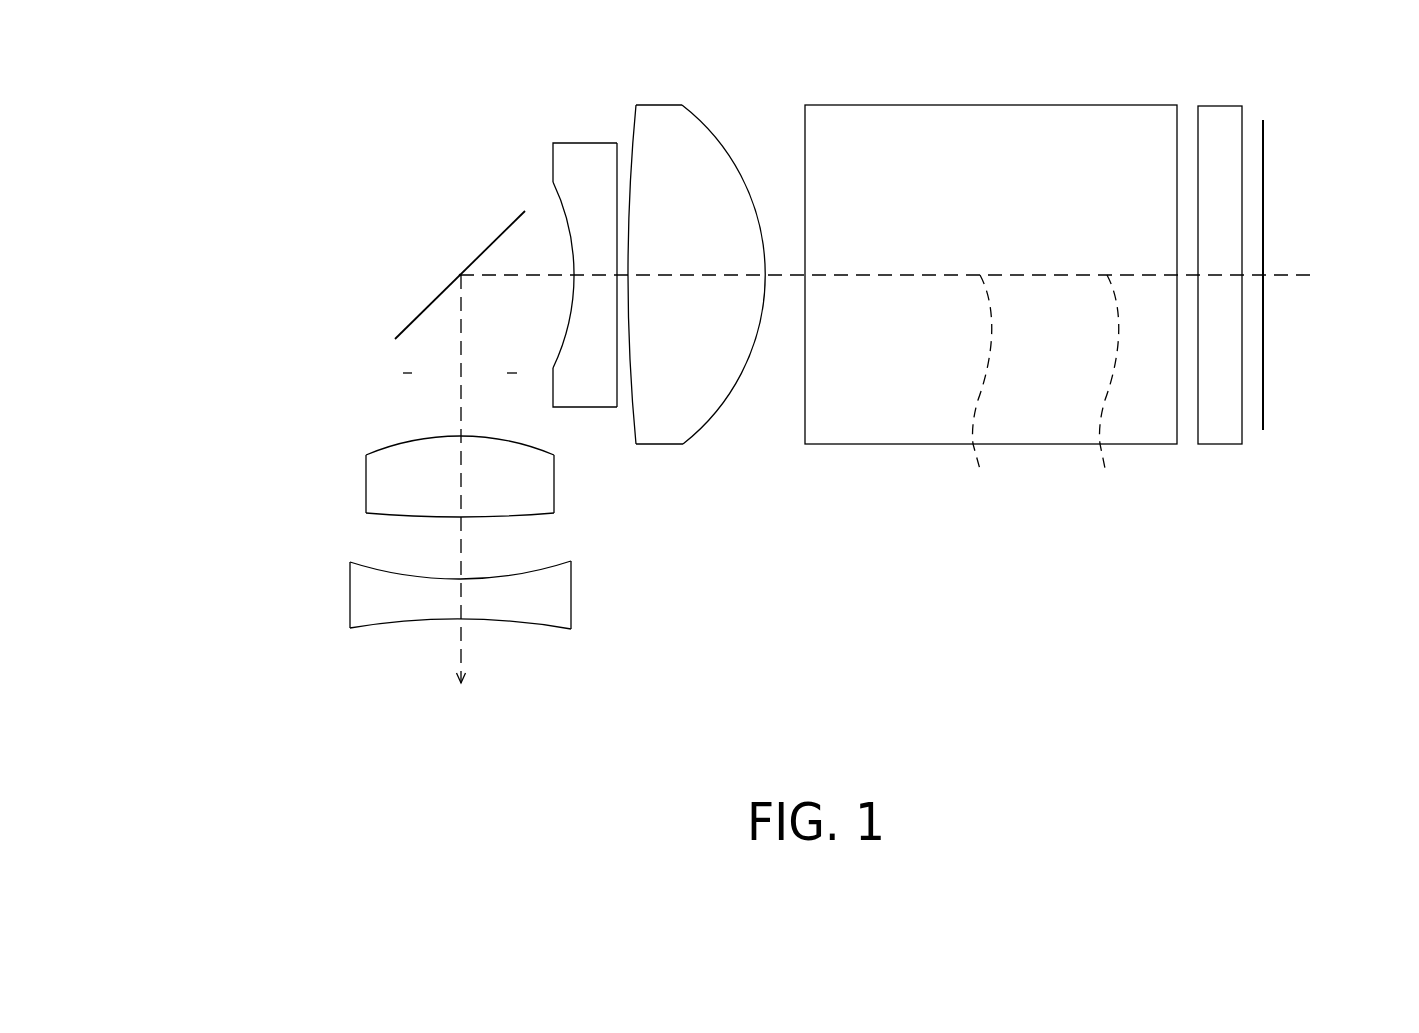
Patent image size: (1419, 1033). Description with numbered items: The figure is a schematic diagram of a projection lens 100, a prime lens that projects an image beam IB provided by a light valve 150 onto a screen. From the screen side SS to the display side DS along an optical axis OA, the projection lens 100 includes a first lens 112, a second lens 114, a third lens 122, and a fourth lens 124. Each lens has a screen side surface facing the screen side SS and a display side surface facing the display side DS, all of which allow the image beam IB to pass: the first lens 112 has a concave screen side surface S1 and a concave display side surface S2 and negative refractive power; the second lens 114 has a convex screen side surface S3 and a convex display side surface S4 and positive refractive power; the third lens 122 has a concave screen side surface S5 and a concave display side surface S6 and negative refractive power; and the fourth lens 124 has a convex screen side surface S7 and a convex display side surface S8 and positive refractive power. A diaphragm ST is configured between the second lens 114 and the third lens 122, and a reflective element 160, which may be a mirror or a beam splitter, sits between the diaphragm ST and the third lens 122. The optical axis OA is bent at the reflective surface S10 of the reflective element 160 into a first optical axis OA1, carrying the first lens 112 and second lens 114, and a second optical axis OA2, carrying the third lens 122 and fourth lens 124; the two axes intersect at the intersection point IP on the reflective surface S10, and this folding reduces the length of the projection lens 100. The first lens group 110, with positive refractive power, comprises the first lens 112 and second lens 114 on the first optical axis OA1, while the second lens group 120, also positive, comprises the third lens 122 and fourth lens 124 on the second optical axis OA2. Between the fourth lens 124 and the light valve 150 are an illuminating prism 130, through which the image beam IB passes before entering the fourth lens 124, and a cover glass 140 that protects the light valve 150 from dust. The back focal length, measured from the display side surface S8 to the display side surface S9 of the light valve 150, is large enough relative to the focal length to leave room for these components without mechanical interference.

The projection lens 100 is at (1370, 725).
The first lens group 110 is at (183, 72).
The first lens 112 is at (418, 601).
The second lens 114 is at (417, 485).
The second lens group 120 is at (183, 173).
The third lens 122 is at (561, 281).
The fourth lens 124 is at (696, 274).
The illuminating prism 130 is at (976, 105).
The cover glass 140 is at (1221, 106).
The light valve 150 is at (1258, 272).
The reflective element 160 is at (401, 297).
The screen side surface of the first lens S1 is at (386, 628).
The display side surface of the first lens S2 is at (386, 562).
The screen side surface of the second lens S3 is at (385, 516).
The display side surface of the second lens S4 is at (385, 448).
The screen side surface of the third lens S5 is at (551, 336).
The display side surface of the third lens S6 is at (617, 355).
The screen side surface of the fourth lens S7 is at (633, 390).
The display side surface of the fourth lens S8 is at (726, 406).
The display side surface of the light valve S9 is at (1260, 420).
The reflective surface S10 is at (407, 333).
The diaphragm ST is at (407, 376).
The intersection point IP is at (458, 273).
The optical axis OA is at (1238, 590).
The first optical axis OA1 is at (463, 652).
The second optical axis OA2 is at (885, 394).
The image beam IB is at (1106, 394).
The display side DS is at (1290, 183).
The screen side SS is at (467, 720).